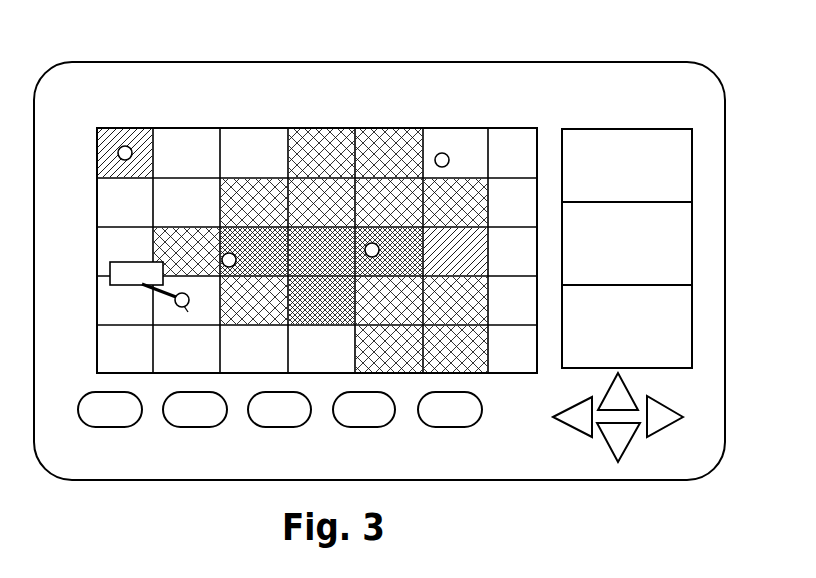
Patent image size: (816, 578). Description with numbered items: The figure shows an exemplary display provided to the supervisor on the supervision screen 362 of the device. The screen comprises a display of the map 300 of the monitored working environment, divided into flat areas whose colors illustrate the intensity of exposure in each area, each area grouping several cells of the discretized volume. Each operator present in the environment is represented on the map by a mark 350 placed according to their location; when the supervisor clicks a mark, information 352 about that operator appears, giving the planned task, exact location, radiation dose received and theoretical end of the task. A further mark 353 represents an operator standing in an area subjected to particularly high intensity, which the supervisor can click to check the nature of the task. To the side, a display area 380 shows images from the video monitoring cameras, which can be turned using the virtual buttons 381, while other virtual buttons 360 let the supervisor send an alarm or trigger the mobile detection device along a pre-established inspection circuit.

The map 300 is at (207, 127).
The mark 350 is at (172, 300).
The information 352 is at (132, 262).
The mark 353 is at (121, 148).
The virtual buttons 360 is at (110, 427).
The supervision screen 362 is at (127, 62).
The display area 380 is at (625, 128).
The virtual buttons 381 is at (633, 437).